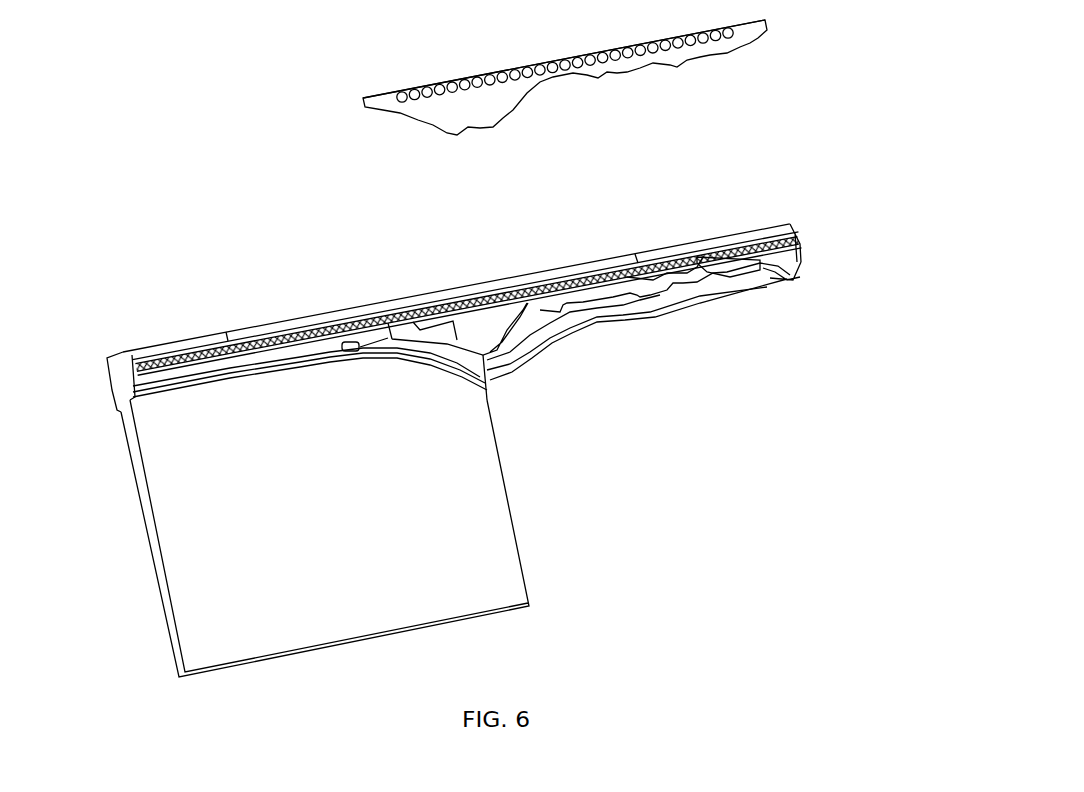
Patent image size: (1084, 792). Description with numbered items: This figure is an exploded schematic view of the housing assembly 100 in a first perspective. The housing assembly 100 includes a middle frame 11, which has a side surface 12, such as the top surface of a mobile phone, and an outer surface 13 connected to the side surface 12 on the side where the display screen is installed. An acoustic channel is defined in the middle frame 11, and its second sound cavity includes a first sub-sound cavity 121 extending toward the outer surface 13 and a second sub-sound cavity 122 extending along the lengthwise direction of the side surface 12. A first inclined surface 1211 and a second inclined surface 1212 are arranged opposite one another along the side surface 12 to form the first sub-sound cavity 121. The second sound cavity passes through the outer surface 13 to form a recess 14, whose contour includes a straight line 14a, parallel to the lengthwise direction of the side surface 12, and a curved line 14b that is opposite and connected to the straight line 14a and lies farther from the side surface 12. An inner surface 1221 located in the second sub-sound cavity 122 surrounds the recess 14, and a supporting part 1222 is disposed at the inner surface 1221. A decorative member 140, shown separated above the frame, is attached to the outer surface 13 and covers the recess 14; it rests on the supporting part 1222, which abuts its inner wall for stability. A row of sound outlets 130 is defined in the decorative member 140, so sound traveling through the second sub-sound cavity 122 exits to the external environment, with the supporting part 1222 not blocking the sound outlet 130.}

The housing assembly 100 is at (225, 77).
The middle frame 11 is at (117, 373).
The side surface 12 is at (287, 318).
The first sub-sound cavity 121 is at (480, 328).
The first inclined surface 1211 is at (450, 340).
The second inclined surface 1212 is at (513, 332).
The second sub-sound cavity 122 is at (705, 272).
The inner surface 1221 is at (572, 285).
The supporting part 1222 is at (678, 283).
The outer surface 13 is at (575, 320).
The sound outlet 130 is at (573, 65).
The decorative member 140 is at (475, 105).
The recess 14 is at (861, 258).
The straight line 14a is at (790, 233).
The curved line 14b is at (790, 277).